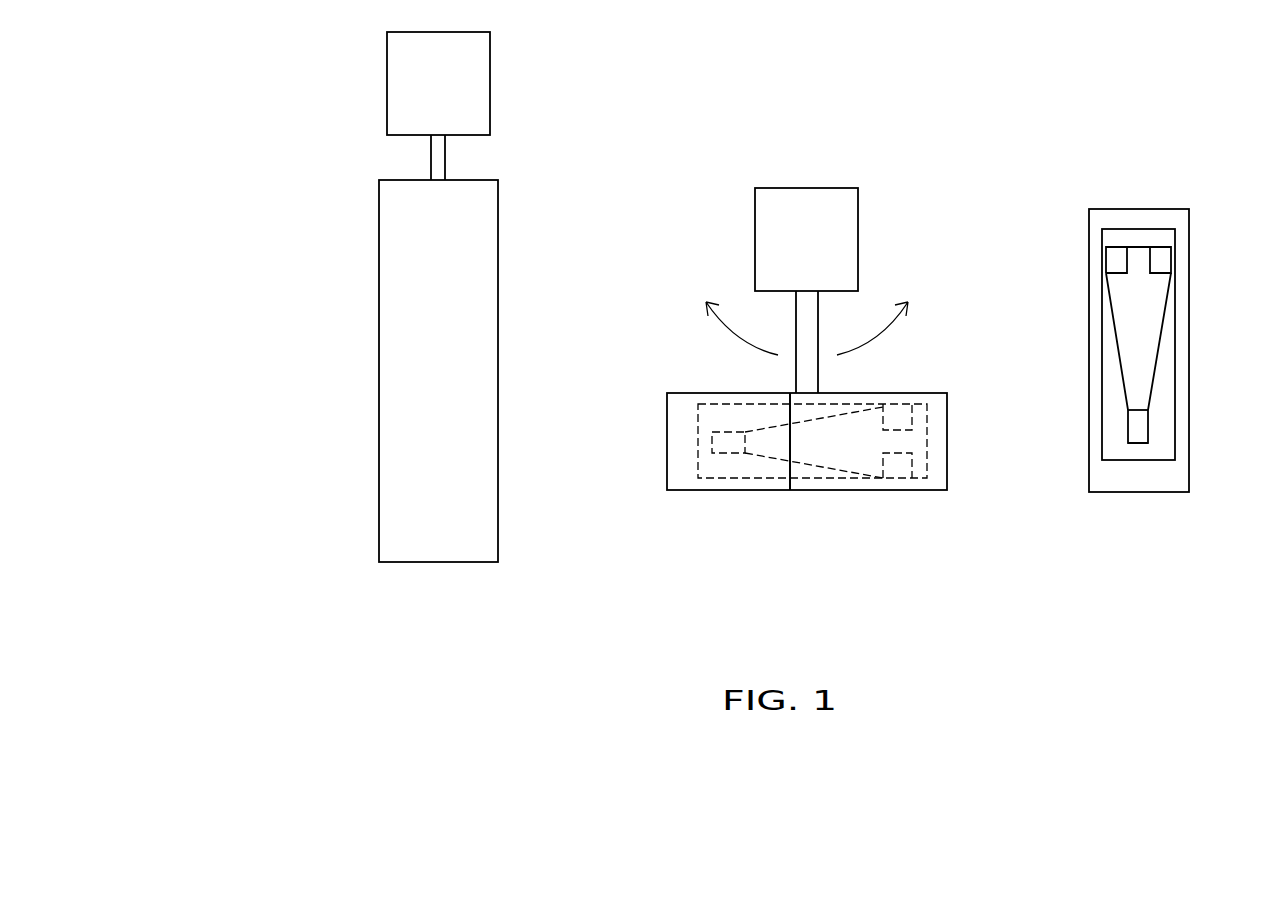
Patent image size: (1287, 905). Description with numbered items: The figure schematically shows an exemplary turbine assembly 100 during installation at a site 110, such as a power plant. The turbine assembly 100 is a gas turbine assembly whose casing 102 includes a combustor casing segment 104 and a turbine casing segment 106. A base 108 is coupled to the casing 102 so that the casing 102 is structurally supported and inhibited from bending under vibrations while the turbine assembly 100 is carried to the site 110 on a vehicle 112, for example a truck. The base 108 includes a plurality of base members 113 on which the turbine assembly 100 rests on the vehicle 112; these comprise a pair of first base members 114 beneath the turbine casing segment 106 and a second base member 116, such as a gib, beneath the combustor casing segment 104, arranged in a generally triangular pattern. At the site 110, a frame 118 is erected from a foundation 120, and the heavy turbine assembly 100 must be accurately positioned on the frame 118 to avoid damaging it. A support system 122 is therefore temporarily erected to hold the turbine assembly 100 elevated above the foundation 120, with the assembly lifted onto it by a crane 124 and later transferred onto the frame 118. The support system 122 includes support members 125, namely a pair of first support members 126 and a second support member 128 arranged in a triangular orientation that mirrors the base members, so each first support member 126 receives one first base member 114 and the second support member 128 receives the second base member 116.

The turbine assembly 100 is at (811, 342).
The casing 102 is at (905, 380).
The combustor casing segment 104 is at (718, 492).
The turbine casing segment 106 is at (885, 492).
The base 108 is at (690, 393).
The site 110 is at (1153, 315).
The vehicle 112 is at (315, 97).
The base members 113 is at (713, 453).
The first base members 114 is at (912, 408).
The second base member 116 is at (712, 437).
The frame 118 is at (1177, 413).
The foundation 120 is at (1190, 358).
The support system 122 is at (1118, 360).
The crane 124 is at (783, 158).
The support members 125 is at (1150, 444).
The first support members 126 is at (1147, 250).
The second support member 128 is at (1127, 433).